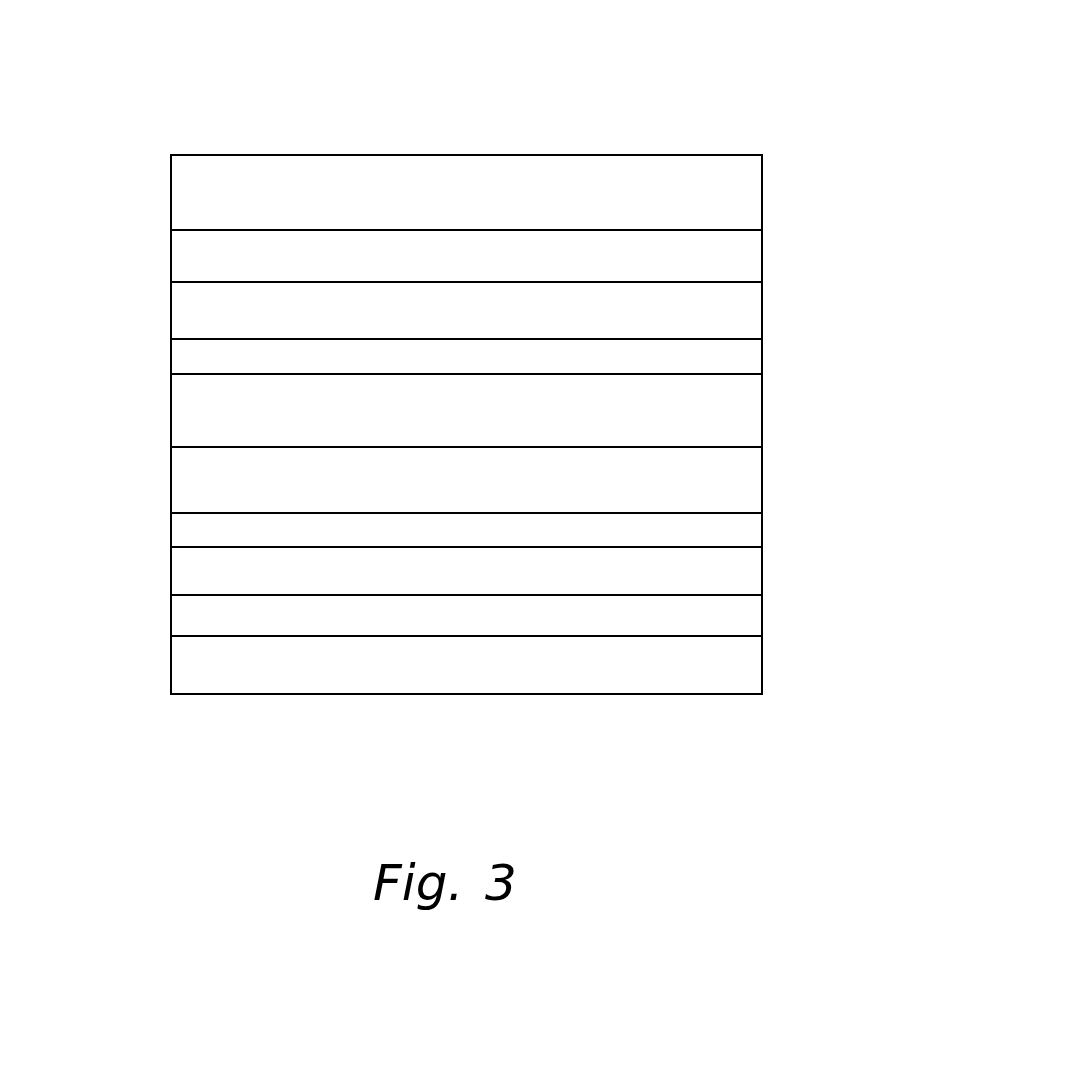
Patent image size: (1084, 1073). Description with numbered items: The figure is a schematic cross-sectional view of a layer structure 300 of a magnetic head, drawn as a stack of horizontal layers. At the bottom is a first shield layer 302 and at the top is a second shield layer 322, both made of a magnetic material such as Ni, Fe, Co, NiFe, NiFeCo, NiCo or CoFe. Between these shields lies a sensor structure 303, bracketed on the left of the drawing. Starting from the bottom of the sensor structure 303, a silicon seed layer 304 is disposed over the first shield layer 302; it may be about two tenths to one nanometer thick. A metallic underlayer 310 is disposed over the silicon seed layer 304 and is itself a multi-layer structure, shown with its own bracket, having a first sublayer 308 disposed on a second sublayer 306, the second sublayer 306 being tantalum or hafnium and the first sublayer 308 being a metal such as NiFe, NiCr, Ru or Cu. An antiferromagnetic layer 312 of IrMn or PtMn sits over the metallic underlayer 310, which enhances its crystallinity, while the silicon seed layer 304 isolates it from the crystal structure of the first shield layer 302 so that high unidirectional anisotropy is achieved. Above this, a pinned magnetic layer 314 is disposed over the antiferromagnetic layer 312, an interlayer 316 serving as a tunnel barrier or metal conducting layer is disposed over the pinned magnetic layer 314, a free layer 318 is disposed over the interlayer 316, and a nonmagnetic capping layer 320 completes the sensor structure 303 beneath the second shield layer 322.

The layer structure 300 is at (653, 47).
The first shield layer 302 is at (763, 653).
The sensor structure 303 is at (75, 220).
The silicon seed layer 304 is at (763, 611).
The second sublayer 306 is at (763, 565).
The first sublayer 308 is at (763, 531).
The metallic underlayer 310 is at (150, 510).
The antiferromagnetic layer 312 is at (763, 465).
The pinned magnetic layer 314 is at (763, 393).
The interlayer 316 is at (763, 355).
The free layer 318 is at (763, 297).
The capping layer 320 is at (763, 244).
The second shield layer 322 is at (763, 173).